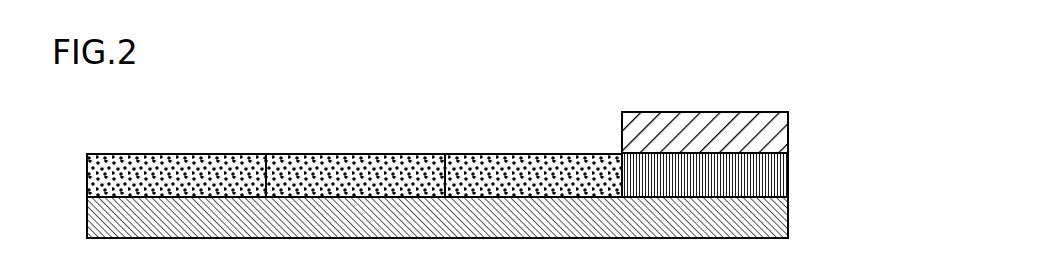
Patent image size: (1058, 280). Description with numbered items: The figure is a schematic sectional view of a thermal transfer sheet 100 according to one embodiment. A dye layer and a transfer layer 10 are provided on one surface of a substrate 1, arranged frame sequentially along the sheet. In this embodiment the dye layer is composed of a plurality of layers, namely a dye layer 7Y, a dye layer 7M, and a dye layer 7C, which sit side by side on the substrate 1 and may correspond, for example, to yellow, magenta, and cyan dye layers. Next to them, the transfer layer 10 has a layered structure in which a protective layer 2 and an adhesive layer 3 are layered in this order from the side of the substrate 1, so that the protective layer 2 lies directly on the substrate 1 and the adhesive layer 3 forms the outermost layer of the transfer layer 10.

The thermal transfer sheet 100 is at (758, 105).
The substrate 1 is at (767, 208).
The dye layer 7Y is at (172, 175).
The dye layer 7M is at (360, 175).
The dye layer 7C is at (530, 175).
The protective layer 2 is at (767, 168).
The adhesive layer 3 is at (767, 130).
The transfer layer 10 is at (775, 154).